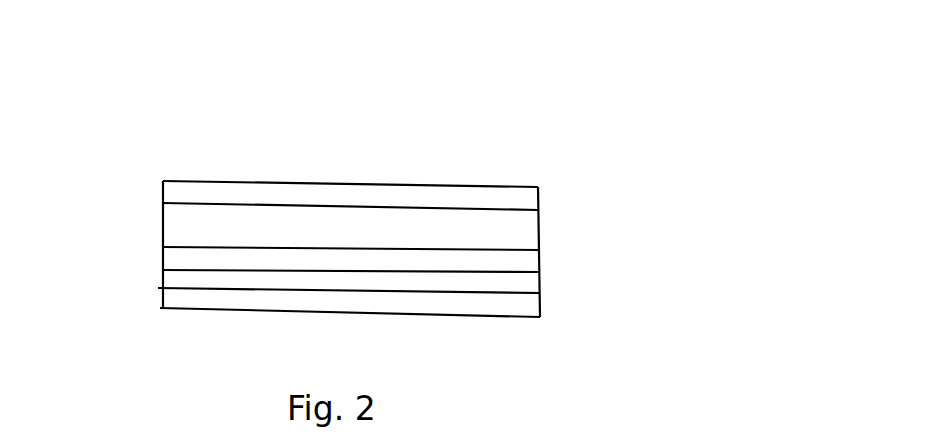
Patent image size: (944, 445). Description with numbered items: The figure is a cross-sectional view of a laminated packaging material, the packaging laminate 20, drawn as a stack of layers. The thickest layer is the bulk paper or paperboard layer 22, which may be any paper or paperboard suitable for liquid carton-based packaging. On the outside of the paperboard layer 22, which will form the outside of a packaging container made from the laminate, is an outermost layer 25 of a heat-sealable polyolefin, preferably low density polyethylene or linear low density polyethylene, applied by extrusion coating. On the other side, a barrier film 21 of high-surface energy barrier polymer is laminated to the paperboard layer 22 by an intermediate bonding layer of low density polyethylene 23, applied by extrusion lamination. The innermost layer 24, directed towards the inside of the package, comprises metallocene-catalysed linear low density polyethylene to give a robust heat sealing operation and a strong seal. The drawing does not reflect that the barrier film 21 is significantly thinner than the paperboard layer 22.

The packaging laminate 20 is at (383, 240).
The outermost layer 25 is at (530, 191).
The paperboard layer 22 is at (525, 233).
The bonding layer of low density polyethylene 23 is at (528, 263).
The barrier film 21 is at (528, 283).
The innermost layer 24 is at (521, 307).